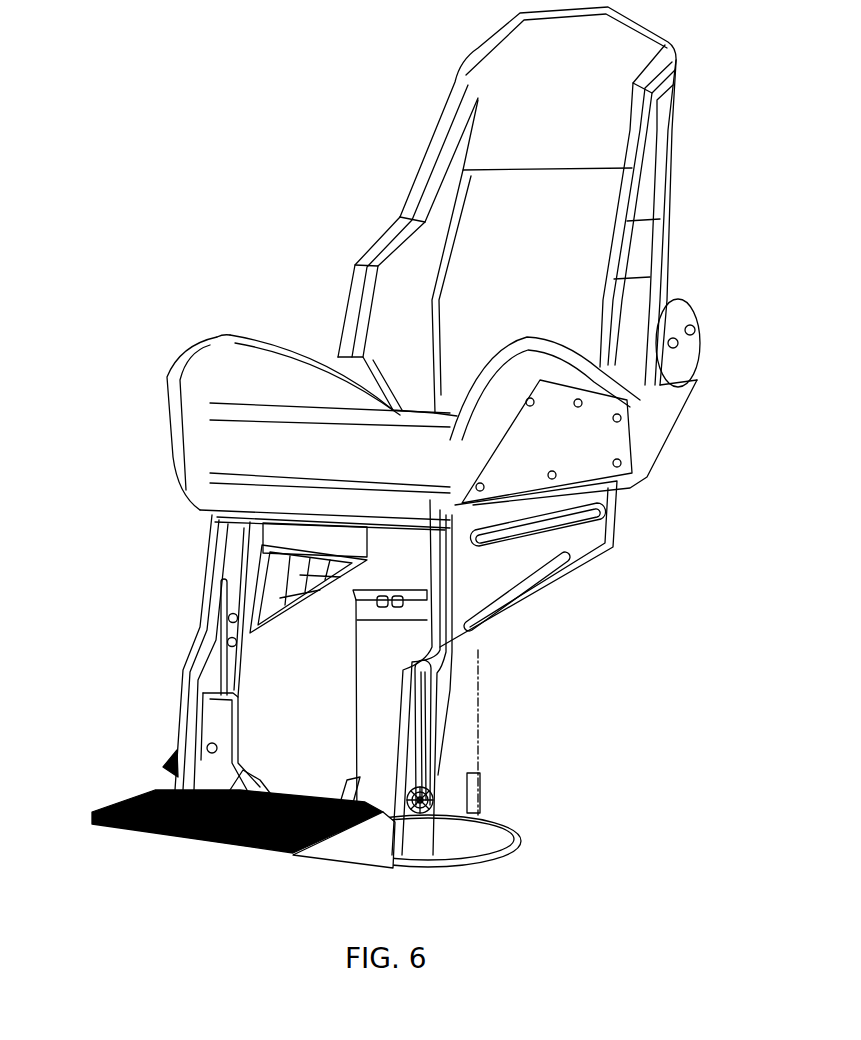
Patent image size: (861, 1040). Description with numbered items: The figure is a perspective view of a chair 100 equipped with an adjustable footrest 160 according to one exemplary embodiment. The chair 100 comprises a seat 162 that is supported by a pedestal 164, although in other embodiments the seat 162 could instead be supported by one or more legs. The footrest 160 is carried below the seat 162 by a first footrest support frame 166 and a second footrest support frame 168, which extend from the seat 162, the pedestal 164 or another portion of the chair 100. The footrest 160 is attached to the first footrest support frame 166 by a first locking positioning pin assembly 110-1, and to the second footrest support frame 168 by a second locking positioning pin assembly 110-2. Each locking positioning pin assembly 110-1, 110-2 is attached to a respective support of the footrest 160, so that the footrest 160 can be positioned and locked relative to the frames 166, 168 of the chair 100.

The chair 100 is at (233, 95).
The seat 162 is at (430, 213).
The pedestal 164 is at (460, 742).
The first footrest support frame 166 is at (440, 647).
The second footrest support frame 168 is at (200, 637).
The adjustable footrest 160 is at (92, 815).
The first locking positioning pin assembly 110-1 is at (430, 805).
The second locking positioning pin assembly 110-2 is at (172, 767).